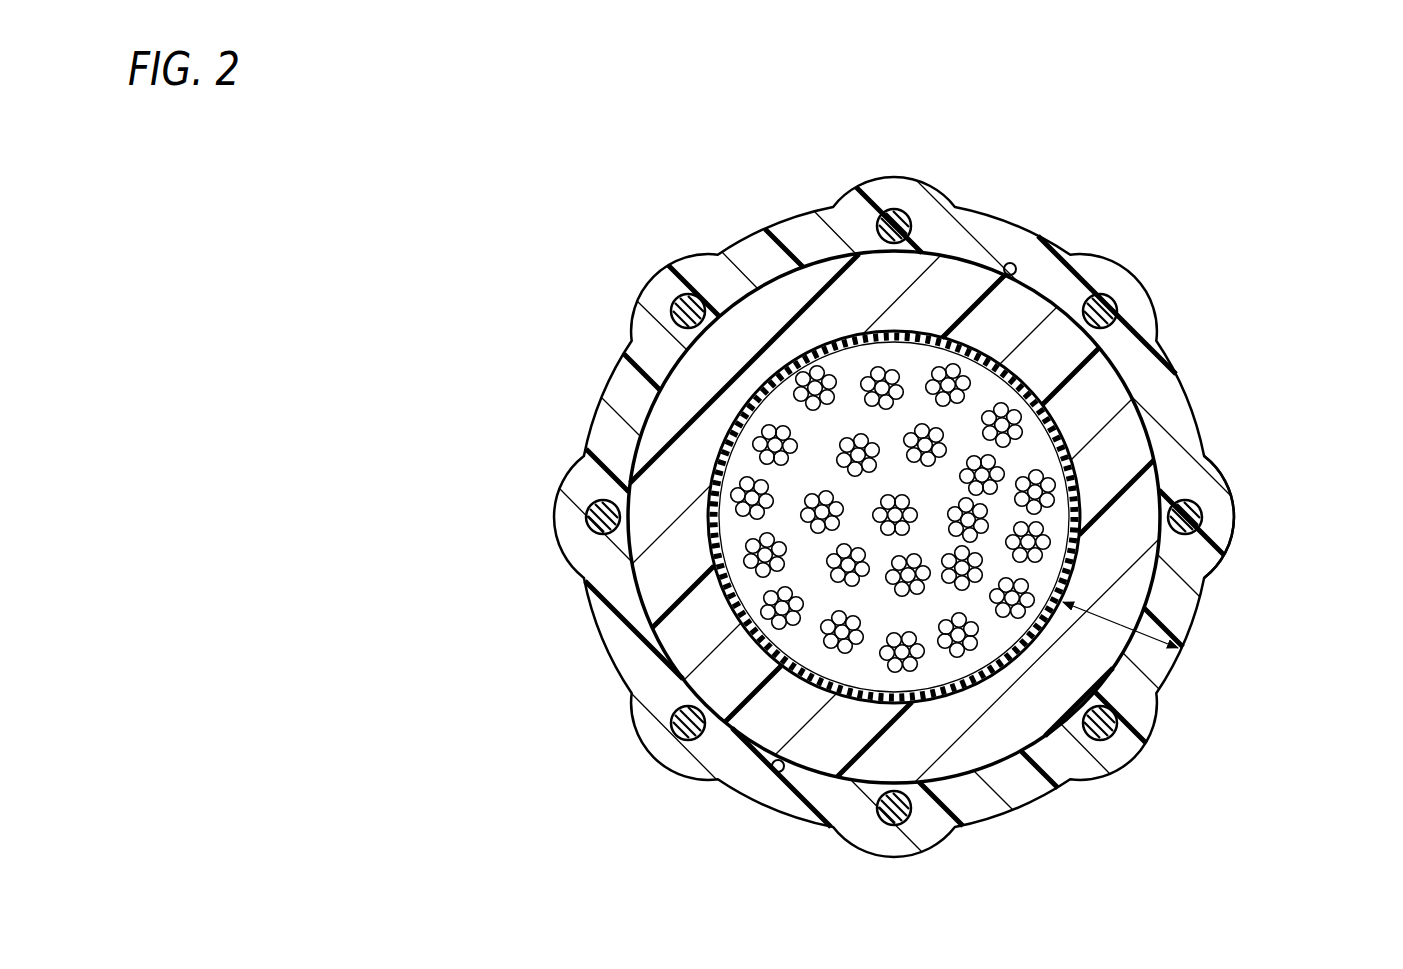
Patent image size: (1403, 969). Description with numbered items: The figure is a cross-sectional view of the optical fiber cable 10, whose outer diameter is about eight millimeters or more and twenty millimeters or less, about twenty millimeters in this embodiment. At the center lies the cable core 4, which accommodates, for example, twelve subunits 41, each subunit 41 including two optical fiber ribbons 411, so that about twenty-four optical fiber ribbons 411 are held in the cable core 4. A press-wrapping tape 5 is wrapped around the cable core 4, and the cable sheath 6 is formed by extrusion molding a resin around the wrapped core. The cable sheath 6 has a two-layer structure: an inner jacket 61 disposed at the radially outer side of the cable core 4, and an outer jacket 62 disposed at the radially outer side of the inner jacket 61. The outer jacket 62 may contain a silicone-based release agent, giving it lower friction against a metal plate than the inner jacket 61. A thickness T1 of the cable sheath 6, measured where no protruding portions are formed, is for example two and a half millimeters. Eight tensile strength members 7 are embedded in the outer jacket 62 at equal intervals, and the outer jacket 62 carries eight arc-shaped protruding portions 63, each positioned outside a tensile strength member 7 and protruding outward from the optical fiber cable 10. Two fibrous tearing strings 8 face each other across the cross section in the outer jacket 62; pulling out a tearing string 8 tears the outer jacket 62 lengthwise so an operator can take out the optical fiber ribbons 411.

The optical fiber cable 10 is at (1125, 162).
The cable core 4 is at (985, 385).
The subunit 41 is at (495, 342).
The optical fiber ribbon 411 is at (755, 430).
The press-wrapping tape 5 is at (1073, 553).
The cable sheath 6 is at (1345, 355).
The inner jacket 61 is at (1125, 425).
The outer jacket 62 is at (1183, 437).
The protruding portion 63 is at (1232, 505).
The tensile strength member 7 is at (1107, 728).
The tearing string 8 is at (1010, 262).
The thickness of the cable sheath T1 is at (1118, 622).